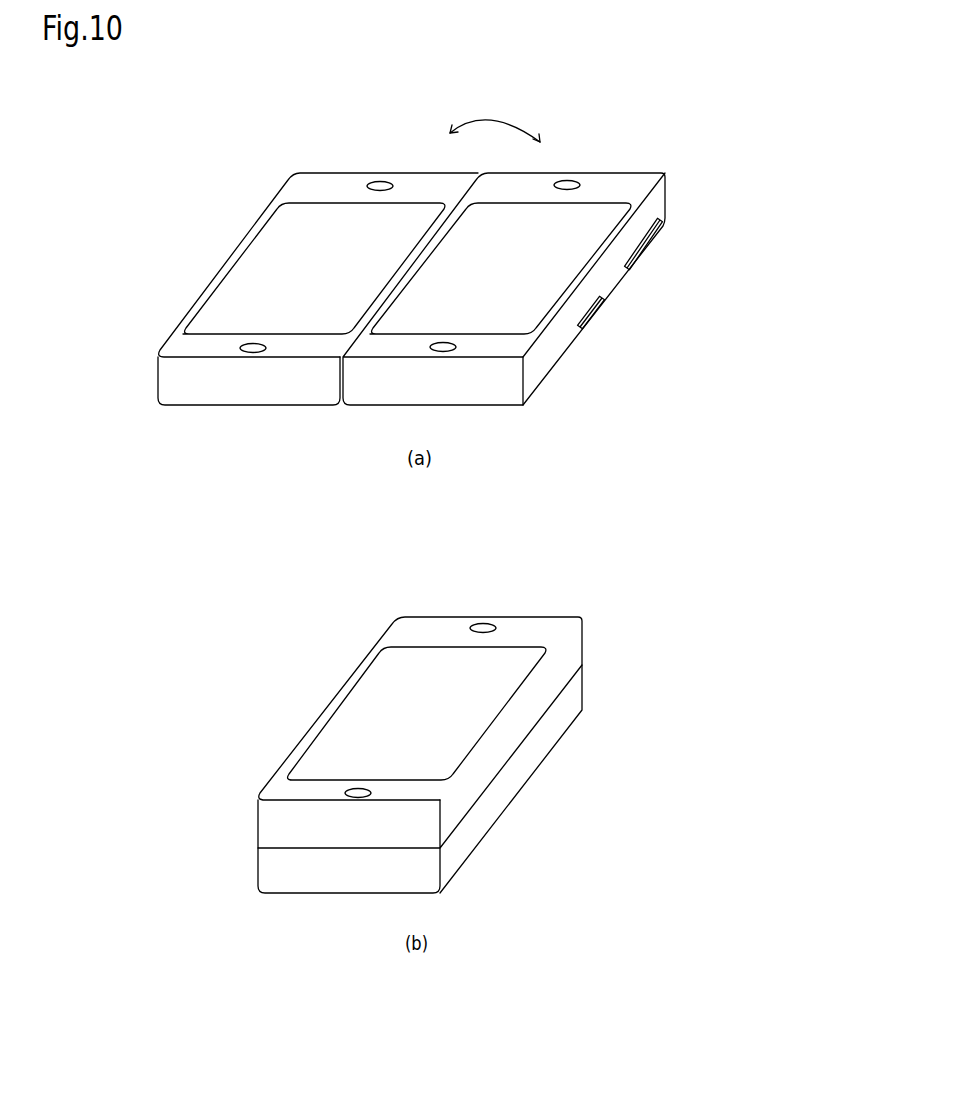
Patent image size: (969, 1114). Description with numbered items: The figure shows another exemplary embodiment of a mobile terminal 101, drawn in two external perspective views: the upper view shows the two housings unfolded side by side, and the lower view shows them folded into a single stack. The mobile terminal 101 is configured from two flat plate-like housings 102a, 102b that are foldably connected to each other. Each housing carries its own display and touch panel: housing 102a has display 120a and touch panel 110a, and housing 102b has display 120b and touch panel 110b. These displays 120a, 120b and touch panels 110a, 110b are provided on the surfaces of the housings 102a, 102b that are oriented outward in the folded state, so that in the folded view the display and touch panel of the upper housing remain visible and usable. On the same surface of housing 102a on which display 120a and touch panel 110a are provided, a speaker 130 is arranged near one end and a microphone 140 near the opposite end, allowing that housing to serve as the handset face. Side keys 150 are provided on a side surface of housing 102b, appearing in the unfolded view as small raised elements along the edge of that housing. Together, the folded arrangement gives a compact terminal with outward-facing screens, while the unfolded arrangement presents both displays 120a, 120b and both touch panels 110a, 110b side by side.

The mobile terminal 101 is at (758, 119).
The housing 102a is at (297, 192).
The housing 102b is at (664, 174).
The touch panel 110a is at (357, 690).
The touch panel 110b is at (538, 313).
The display 120a is at (173, 333).
The display 120b is at (600, 218).
The speaker 130 is at (377, 185).
The microphone 140 is at (247, 354).
The side keys 150 is at (640, 245).